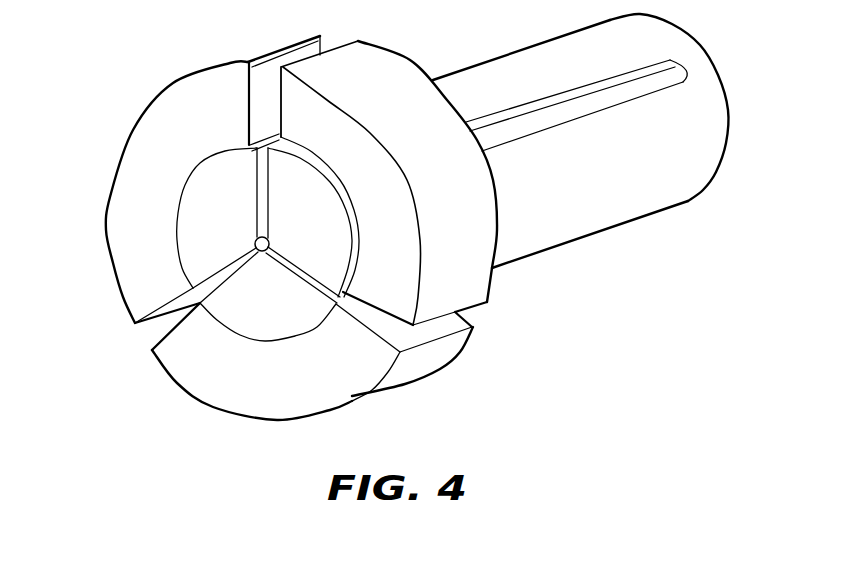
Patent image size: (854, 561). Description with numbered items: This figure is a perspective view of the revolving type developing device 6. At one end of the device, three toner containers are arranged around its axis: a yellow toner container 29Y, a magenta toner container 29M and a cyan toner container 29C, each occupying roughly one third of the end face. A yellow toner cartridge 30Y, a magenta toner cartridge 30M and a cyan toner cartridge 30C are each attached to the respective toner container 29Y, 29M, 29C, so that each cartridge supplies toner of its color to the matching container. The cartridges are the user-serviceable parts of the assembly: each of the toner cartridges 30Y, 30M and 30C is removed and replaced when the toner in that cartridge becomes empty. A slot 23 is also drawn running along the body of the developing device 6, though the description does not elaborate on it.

The revolving type developing device 6 is at (647, 212).
The slot 23 is at (678, 65).
The magenta toner container 29M is at (223, 165).
The yellow toner container 29Y is at (300, 177).
The cyan toner container 29C is at (260, 333).
The magenta toner cartridge 30M is at (127, 267).
The yellow toner cartridge 30Y is at (400, 78).
The cyan toner cartridge 30C is at (360, 380).